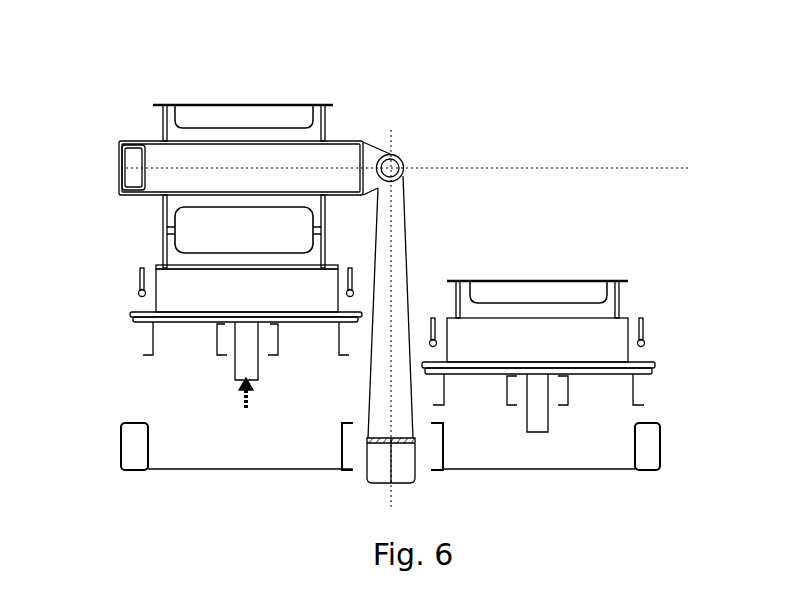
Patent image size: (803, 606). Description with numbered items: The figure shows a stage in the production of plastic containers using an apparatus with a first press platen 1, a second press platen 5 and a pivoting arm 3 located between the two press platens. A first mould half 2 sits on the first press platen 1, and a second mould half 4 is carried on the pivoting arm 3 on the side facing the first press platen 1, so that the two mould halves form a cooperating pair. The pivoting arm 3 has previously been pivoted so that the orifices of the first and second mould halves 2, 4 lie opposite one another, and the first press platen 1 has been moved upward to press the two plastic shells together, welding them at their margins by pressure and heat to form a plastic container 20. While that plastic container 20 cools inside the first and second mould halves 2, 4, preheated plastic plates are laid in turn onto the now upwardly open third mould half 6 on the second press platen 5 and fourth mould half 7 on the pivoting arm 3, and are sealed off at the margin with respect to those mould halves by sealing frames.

The first press platen 1 is at (180, 292).
The first mould half 2 is at (175, 260).
The pivoting arm 3 is at (164, 177).
The second mould half 4 is at (167, 215).
The second press platen 5 is at (592, 345).
The third mould half 6 is at (613, 307).
The fourth mould half 7 is at (313, 133).
The plastic container 20 is at (293, 228).